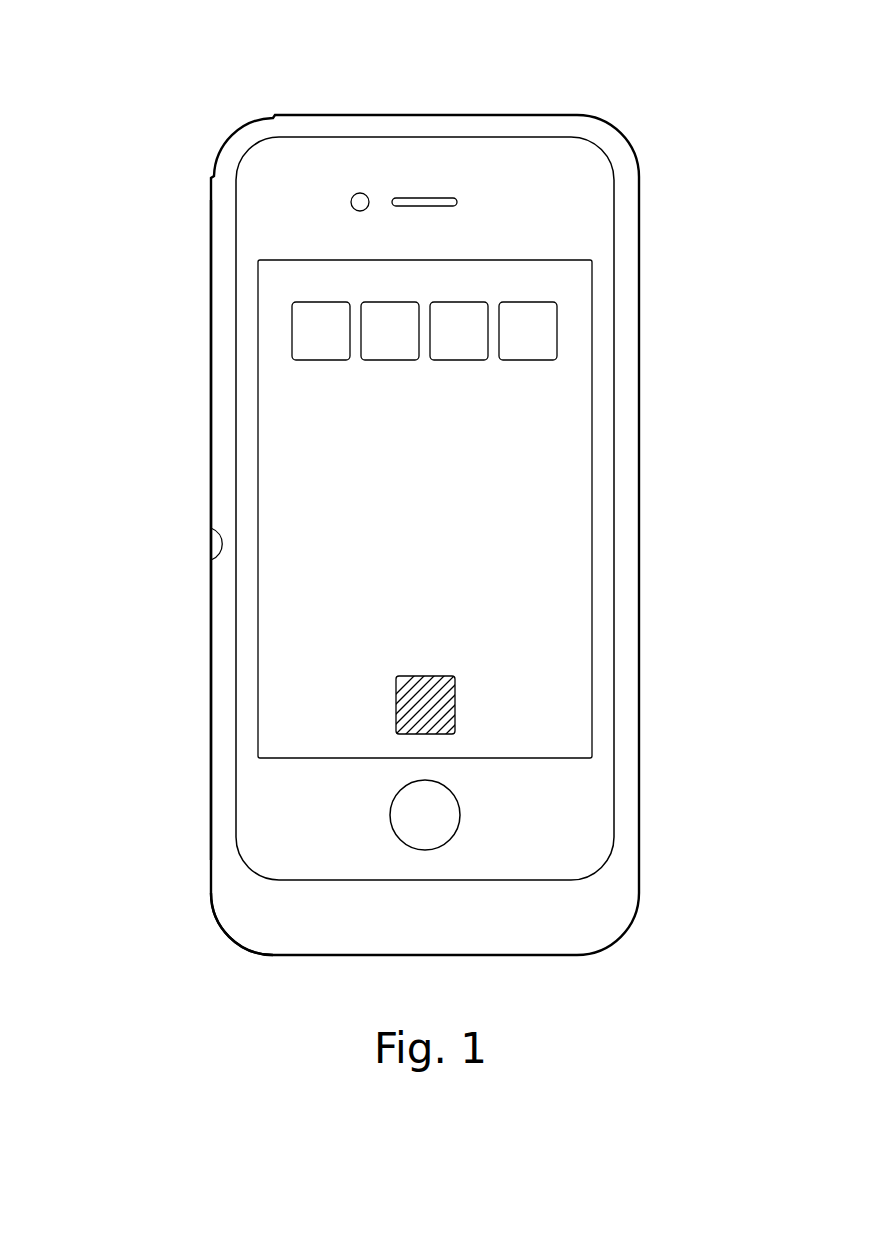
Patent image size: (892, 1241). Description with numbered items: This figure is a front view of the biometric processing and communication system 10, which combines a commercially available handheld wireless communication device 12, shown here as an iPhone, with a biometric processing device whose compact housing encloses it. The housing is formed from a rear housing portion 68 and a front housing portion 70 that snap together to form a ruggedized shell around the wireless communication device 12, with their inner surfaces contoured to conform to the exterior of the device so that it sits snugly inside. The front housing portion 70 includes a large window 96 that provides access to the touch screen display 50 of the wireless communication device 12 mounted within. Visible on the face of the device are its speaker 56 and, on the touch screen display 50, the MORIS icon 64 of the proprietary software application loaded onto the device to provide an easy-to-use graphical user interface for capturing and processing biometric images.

The biometric processing and communication system 10 is at (297, 115).
The wireless communication device 12 is at (580, 810).
The touch screen display 50 is at (533, 496).
The speaker 56 is at (477, 188).
The MORIS icon 64 is at (445, 693).
The rear housing portion 68 is at (210, 360).
The front housing portion 70 is at (240, 927).
The window 96 is at (211, 530).